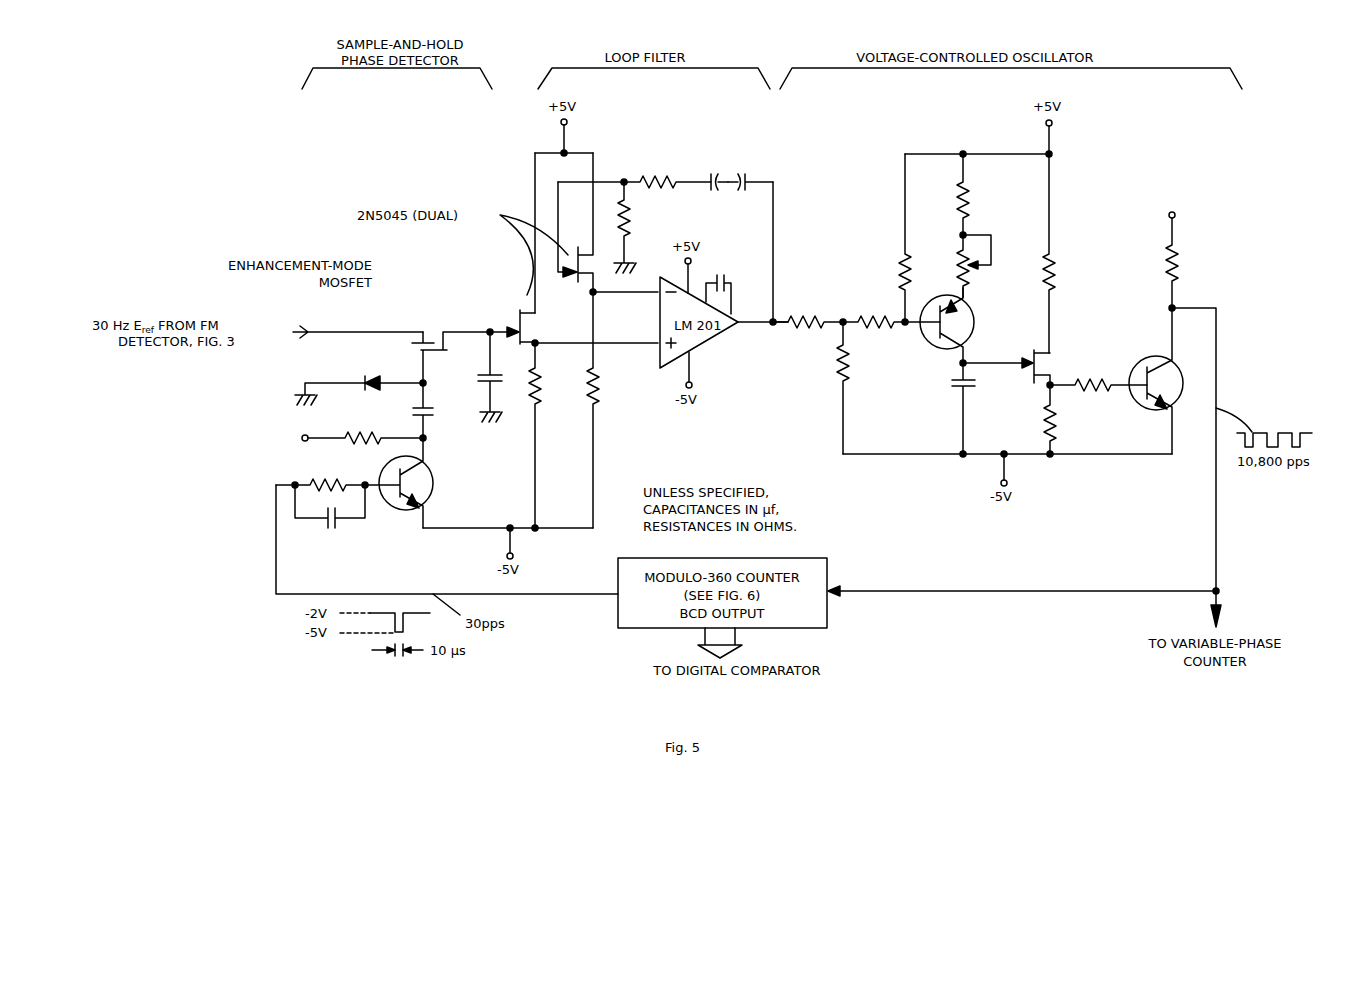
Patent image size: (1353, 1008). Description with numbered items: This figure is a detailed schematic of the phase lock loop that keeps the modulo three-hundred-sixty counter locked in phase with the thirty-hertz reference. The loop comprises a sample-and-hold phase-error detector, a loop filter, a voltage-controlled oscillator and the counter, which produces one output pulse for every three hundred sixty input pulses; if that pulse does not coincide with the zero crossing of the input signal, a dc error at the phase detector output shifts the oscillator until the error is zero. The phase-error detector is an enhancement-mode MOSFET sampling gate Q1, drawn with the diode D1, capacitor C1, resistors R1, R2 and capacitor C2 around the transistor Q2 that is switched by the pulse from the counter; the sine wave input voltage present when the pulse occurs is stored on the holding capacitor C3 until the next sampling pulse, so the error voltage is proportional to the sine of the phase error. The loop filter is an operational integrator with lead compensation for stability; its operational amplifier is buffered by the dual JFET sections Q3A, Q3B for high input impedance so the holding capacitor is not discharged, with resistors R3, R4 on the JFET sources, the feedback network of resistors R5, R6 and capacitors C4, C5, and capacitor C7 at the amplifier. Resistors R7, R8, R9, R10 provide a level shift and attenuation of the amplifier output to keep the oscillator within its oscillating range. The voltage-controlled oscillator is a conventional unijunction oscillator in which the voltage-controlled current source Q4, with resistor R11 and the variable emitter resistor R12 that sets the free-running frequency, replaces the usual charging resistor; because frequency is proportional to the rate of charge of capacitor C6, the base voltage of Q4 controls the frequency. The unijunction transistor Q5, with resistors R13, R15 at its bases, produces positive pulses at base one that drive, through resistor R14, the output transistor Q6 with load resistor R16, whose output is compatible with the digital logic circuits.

The enhancement-mode MOSFET 2N4351 Q1 is at (372, 285).
The transistor Q2 is at (410, 483).
The dual JFET 2N5045 section A Q3A is at (528, 327).
The dual JFET 2N5045 section B Q3B is at (573, 228).
The voltage-controlled current source Q4 is at (959, 325).
The unijunction transistor Q5 is at (1017, 362).
The output transistor Q6 is at (1164, 381).
The diode 1N270 D1 is at (359, 378).
The capacitor .1 C1 is at (435, 410).
The capacitor 47pf C2 is at (330, 516).
The holding capacitor C3 is at (477, 377).
The capacitor 22 C4 is at (715, 164).
The capacitor 22 C5 is at (750, 164).
The charging capacitor C6 is at (952, 408).
The capacitor 27pf C7 is at (730, 282).
The resistor 5.1K R1 is at (346, 429).
The resistor 2.2K R2 is at (320, 474).
The resistor 120K R3 is at (555, 435).
The resistor 120K R4 is at (614, 410).
The resistor 15K R5 is at (634, 163).
The resistor 12K R6 is at (639, 227).
The level-shift and attenuation resistor R7 is at (808, 304).
The level-shift and attenuation resistor R8 is at (859, 388).
The level-shift and attenuation resistor R9 is at (874, 304).
The level-shift and attenuation resistor R10 is at (920, 238).
The resistor 2K R11 is at (976, 194).
The emitter resistor R12 is at (976, 275).
The resistor 360 R13 is at (1064, 253).
The resistor 1K R14 is at (1098, 368).
The resistor 24 R15 is at (1063, 419).
The resistor 1.2K R16 is at (1182, 250).